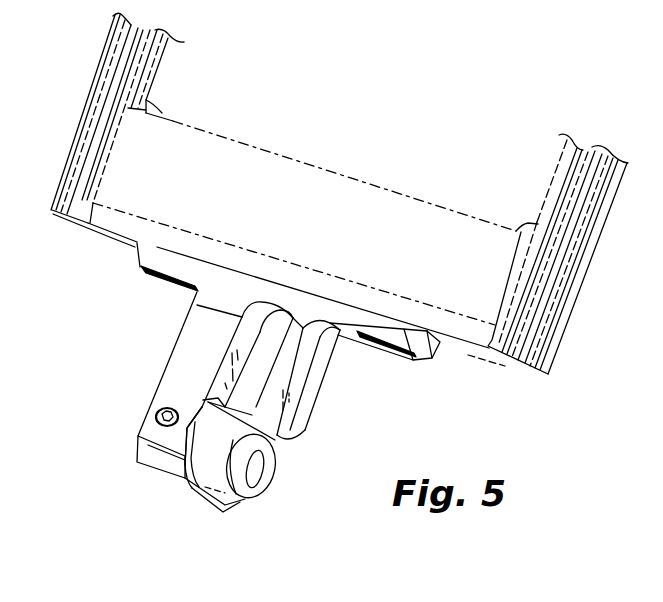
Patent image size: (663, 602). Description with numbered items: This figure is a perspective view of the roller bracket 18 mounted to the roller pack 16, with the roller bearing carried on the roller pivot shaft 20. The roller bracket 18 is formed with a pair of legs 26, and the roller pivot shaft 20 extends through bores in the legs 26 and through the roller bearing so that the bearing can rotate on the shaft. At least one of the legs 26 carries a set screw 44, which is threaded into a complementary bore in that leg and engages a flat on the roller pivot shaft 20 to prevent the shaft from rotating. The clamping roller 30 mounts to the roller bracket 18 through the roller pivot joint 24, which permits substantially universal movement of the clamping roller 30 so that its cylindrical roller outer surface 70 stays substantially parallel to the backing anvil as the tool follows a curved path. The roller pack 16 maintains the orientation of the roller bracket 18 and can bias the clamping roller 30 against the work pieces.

The roller pack 16 is at (548, 360).
The roller bracket 18 is at (420, 361).
The roller pivot shaft 20 is at (260, 470).
The roller pivot joint 24 is at (228, 510).
The legs 26 is at (187, 345).
The clamping roller 30 is at (200, 503).
The set screw 44 is at (156, 417).
The cylindrical roller outer surface 70 is at (203, 402).